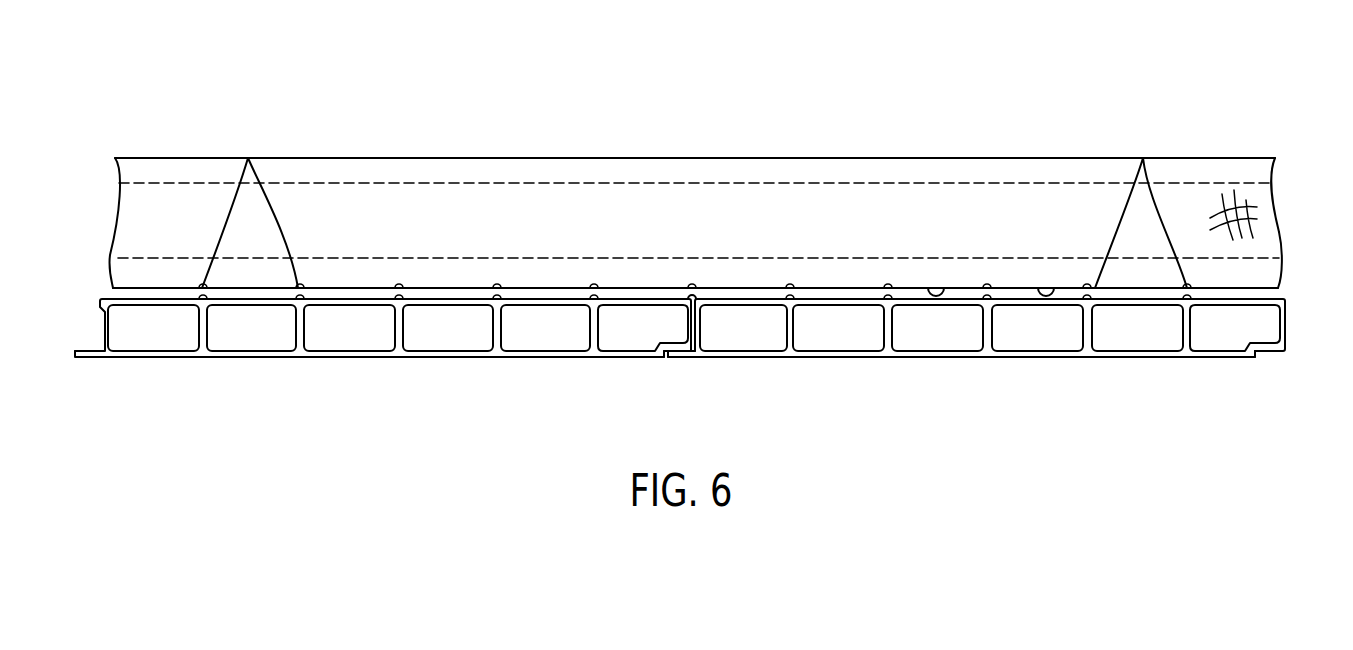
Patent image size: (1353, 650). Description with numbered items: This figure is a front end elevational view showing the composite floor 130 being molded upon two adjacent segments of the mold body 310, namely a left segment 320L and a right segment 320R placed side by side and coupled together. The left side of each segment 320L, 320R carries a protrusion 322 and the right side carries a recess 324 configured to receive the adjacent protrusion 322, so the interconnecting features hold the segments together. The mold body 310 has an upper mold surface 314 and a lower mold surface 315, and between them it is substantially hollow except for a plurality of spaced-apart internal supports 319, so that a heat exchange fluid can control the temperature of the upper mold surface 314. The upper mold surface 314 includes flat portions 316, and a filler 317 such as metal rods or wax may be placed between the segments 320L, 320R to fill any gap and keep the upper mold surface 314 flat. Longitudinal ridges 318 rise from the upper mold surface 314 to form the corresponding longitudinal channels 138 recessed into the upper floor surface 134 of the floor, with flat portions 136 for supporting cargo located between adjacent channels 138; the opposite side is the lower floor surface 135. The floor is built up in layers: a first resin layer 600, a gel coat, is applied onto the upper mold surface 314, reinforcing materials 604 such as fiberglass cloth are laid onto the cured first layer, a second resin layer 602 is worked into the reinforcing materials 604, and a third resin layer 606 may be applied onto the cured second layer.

The composite floor 130 is at (863, 113).
The upper floor surface 134 is at (1057, 288).
The lower floor surface 135 is at (642, 157).
The flat portions 136 is at (947, 288).
The longitudinal channels 138 is at (1141, 207).
The mold body 310 is at (990, 378).
The upper mold surface 314 is at (420, 298).
The lower mold surface 315 is at (435, 360).
The flat portions 316 is at (134, 298).
The filler 317 is at (692, 290).
The longitudinal ridges 318 is at (250, 207).
The internal supports 319 is at (296, 328).
The left segment 320L is at (585, 360).
The right segment 320R is at (782, 360).
The protrusion 322 is at (86, 360).
The recess 324 is at (665, 360).
The first resin layer 600 is at (1278, 277).
The second resin layer 602 is at (1273, 247).
The reinforcing materials 604 is at (1252, 203).
The third resin layer 606 is at (1265, 172).